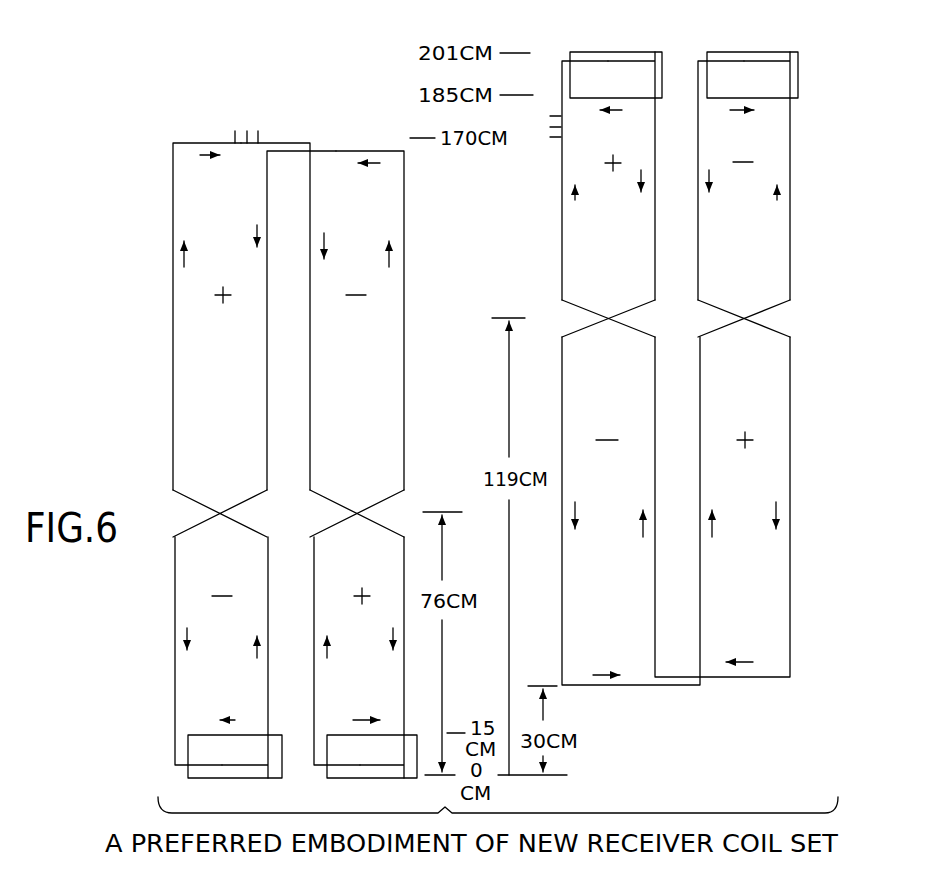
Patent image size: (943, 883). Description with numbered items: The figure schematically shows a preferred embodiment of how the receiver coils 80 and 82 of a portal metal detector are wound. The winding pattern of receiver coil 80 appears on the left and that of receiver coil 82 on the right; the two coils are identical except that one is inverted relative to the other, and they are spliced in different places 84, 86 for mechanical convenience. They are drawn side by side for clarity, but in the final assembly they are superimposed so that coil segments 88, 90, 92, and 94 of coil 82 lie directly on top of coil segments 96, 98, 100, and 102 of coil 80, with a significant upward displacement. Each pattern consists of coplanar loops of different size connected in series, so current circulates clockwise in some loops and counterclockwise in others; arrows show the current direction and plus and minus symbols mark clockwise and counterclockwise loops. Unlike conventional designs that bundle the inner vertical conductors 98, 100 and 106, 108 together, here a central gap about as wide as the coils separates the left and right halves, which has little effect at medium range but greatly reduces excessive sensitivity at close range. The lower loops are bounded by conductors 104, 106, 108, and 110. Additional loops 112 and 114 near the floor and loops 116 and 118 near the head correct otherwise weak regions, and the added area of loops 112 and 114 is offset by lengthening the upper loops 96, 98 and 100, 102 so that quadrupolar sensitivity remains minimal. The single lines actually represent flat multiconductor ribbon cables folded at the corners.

The receiver coil 80 is at (293, 88).
The receiver coil 82 is at (668, 32).
The splice 84 is at (262, 133).
The splice 86 is at (549, 118).
The coil segment 88 is at (565, 180).
The coil segment 90 is at (631, 176).
The coil segment 92 is at (704, 180).
The coil segment 94 is at (767, 176).
The upper loop conductor 96 is at (173, 391).
The inner vertical conductor 98 is at (266, 420).
The inner vertical conductor 100 is at (312, 407).
The upper loop conductor 102 is at (403, 432).
The lower loop conductor 104 is at (175, 576).
The inner vertical conductor 106 is at (267, 684).
The inner vertical conductor 108 is at (315, 576).
The lower loop conductor 110 is at (403, 684).
The additional loop 112 is at (282, 766).
The additional loop 114 is at (417, 766).
The additional loop 116 is at (662, 62).
The additional loop 118 is at (798, 72).